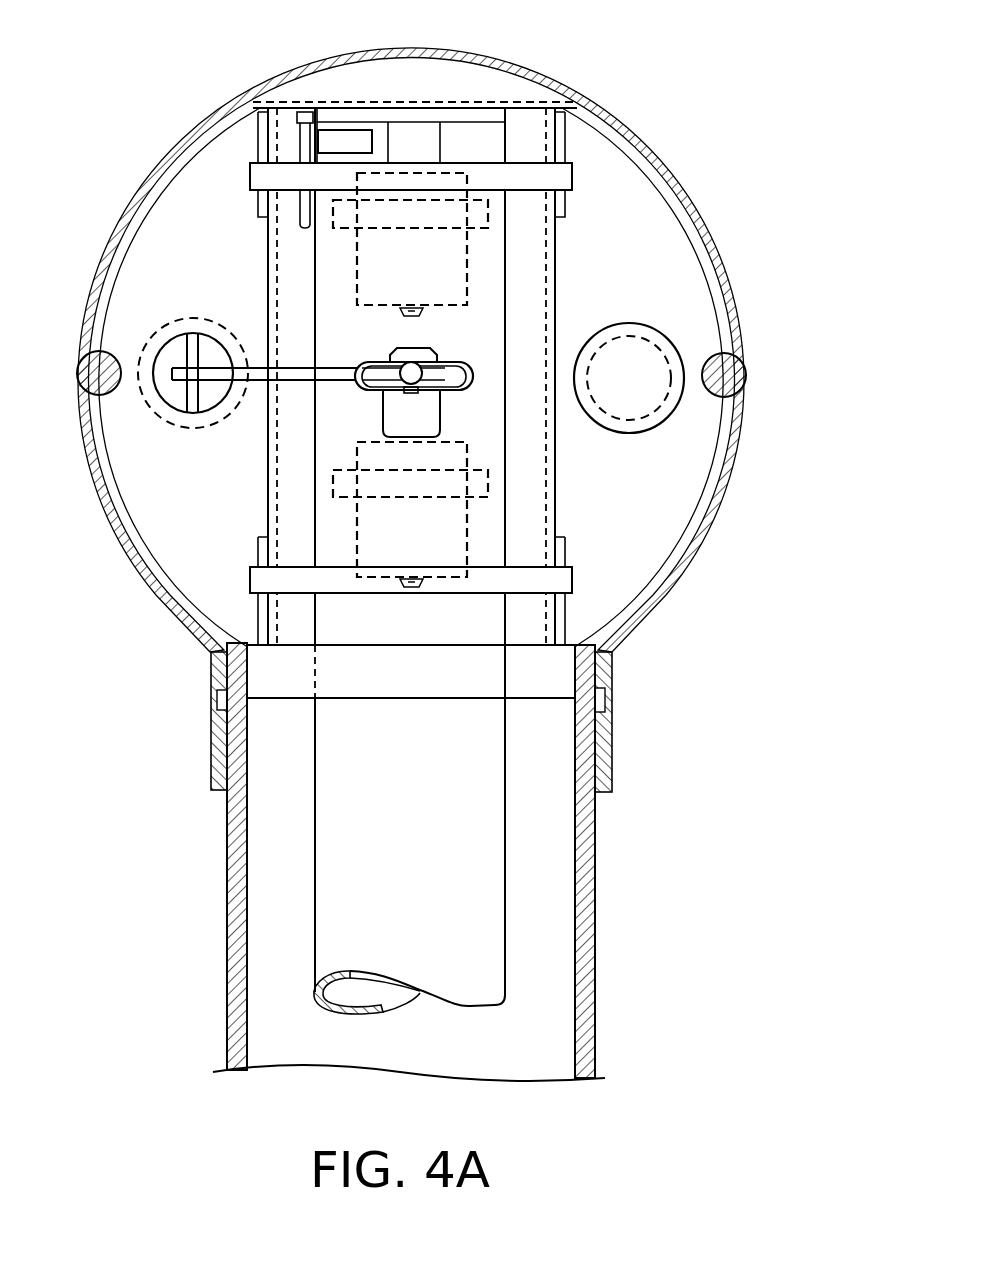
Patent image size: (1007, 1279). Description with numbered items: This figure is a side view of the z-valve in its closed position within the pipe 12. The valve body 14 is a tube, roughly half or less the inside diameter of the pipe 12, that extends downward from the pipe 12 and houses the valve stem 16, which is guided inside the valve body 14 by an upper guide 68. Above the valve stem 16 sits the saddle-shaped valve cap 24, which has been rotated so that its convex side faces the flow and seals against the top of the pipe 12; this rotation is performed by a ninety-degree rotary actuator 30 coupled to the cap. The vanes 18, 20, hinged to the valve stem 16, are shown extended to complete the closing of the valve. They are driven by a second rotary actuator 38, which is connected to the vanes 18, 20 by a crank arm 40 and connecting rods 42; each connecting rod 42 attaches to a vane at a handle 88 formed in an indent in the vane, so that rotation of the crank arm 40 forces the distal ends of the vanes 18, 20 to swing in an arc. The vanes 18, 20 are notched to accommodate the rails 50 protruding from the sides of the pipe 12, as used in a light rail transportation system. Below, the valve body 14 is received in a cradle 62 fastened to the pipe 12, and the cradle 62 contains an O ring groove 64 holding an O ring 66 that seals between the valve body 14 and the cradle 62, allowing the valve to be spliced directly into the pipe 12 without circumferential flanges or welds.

The pipe 12 is at (645, 128).
The valve body 14 is at (599, 838).
The valve stem 16 is at (514, 928).
The vane 18 is at (672, 494).
The vane 20 is at (222, 563).
The valve cap 24 is at (467, 78).
The rotary actuator 30 is at (442, 276).
The rotary actuator 38 is at (442, 527).
The crank arm 40 is at (433, 371).
The connecting rod 42 is at (256, 385).
The rail 50 is at (721, 352).
The cradle 62 is at (620, 747).
The O ring groove 64 is at (611, 657).
The O ring 66 is at (600, 703).
The upper guide 68 is at (280, 668).
The handle 88 is at (183, 384).